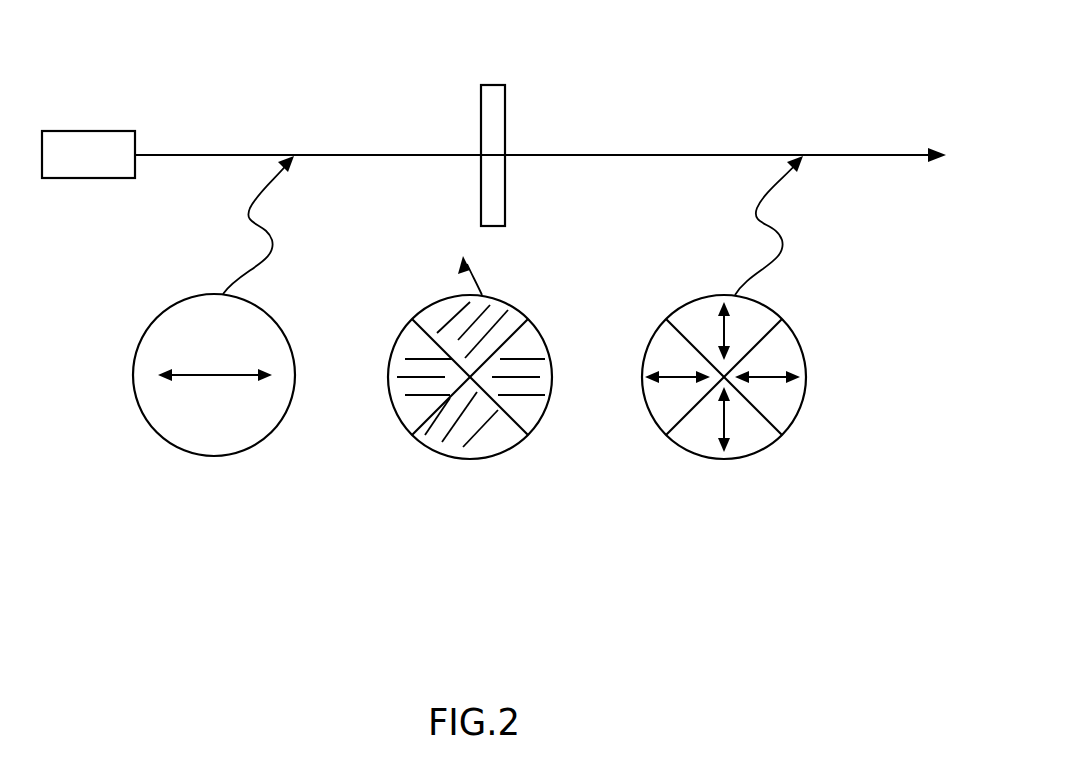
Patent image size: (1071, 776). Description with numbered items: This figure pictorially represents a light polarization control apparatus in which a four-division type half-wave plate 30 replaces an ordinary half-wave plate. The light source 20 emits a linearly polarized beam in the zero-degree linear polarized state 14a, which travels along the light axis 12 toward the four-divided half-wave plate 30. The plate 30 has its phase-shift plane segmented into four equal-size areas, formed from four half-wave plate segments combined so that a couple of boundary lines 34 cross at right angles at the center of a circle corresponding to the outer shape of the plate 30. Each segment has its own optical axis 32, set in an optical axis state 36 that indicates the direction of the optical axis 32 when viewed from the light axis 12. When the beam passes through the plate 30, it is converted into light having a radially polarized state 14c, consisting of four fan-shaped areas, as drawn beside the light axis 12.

The light source 20 is at (98, 131).
The light axis 12 is at (185, 154).
The four-division type λ/2 plate 30 is at (500, 85).
The zero-degree linear polarized state 14a is at (225, 458).
The optical axis 32 is at (527, 362).
The boundary lines 34 is at (420, 423).
The optical axis state 36 is at (483, 458).
The radially polarized state 14c is at (748, 456).